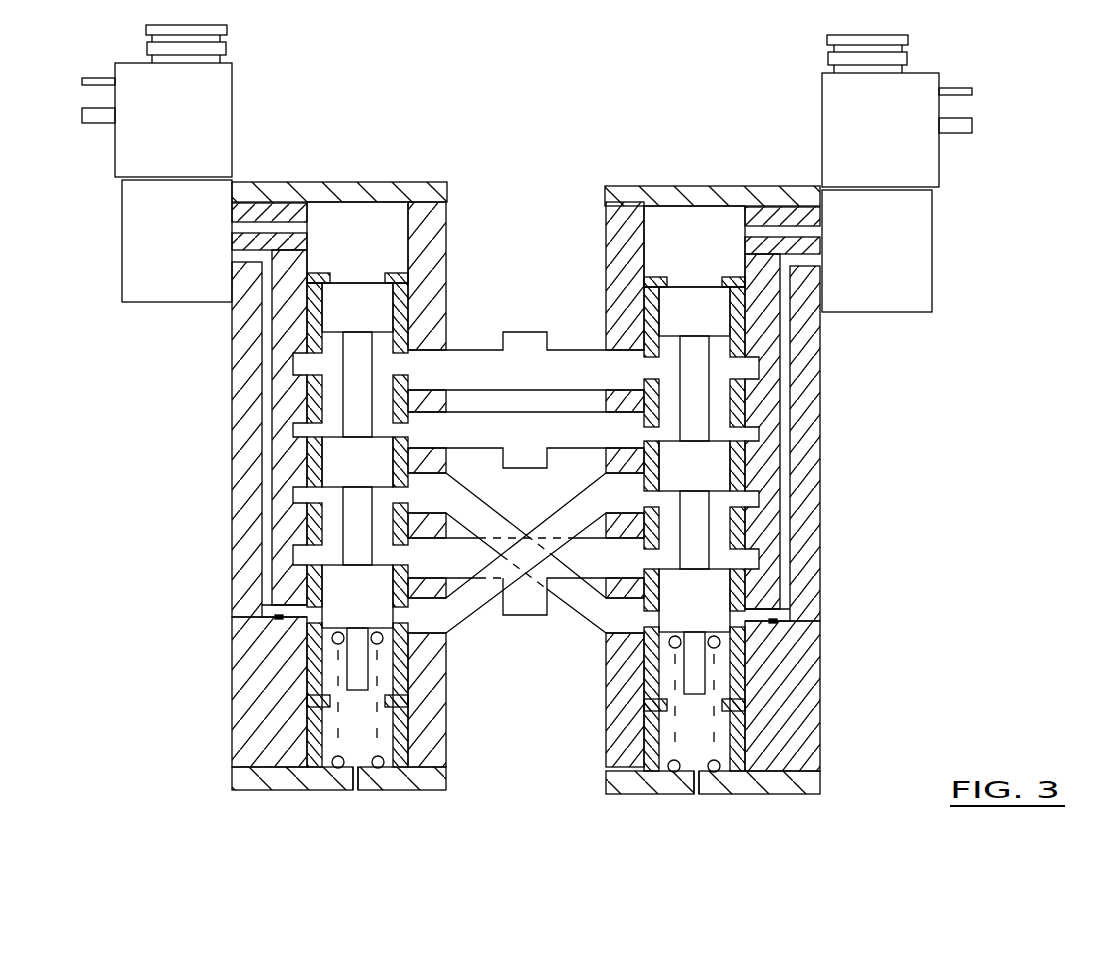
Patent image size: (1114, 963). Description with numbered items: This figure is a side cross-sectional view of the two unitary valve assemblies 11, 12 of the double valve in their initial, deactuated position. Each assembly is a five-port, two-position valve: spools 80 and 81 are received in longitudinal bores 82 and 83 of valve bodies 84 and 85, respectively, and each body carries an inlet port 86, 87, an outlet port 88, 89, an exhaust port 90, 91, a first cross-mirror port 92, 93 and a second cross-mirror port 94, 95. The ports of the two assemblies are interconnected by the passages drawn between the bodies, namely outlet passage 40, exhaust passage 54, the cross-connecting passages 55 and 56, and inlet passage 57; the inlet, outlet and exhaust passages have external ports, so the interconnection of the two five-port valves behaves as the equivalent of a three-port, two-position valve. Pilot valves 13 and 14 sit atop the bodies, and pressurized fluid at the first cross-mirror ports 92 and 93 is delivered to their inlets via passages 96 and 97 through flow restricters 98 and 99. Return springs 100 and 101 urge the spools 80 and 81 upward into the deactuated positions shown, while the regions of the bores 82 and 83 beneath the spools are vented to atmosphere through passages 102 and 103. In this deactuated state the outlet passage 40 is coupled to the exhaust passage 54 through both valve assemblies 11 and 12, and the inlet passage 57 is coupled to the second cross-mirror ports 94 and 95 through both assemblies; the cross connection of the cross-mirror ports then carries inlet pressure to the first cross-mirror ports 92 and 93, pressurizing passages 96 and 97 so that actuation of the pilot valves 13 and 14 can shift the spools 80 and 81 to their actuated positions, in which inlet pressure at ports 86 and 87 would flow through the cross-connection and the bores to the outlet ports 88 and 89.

The valve assembly 11 is at (372, 148).
The valve assembly 12 is at (722, 167).
The pilot valve 13 is at (233, 110).
The pilot valve 14 is at (822, 109).
The outlet passage 40 is at (533, 412).
The exhaust passage 54 is at (563, 350).
The passage 55 is at (475, 615).
The passage 56 is at (585, 620).
The inlet passage 57 is at (525, 615).
The spool 80 is at (358, 282).
The spool 81 is at (703, 278).
The longitudinal bore 82 is at (337, 220).
The longitudinal bore 83 is at (688, 230).
The valve body 84 is at (447, 215).
The valve body 85 is at (605, 225).
The inlet port 86 is at (440, 572).
The inlet port 87 is at (638, 572).
The outlet port 88 is at (440, 447).
The outlet port 89 is at (638, 447).
The exhaust port 90 is at (442, 381).
The exhaust port 91 is at (637, 381).
The first cross-mirror port 92 is at (440, 632).
The first cross-mirror port 93 is at (638, 632).
The second cross-mirror port 94 is at (442, 505).
The second cross-mirror port 95 is at (637, 505).
The passage 96 is at (250, 472).
The passage 97 is at (795, 480).
The flow restricter 98 is at (277, 627).
The flow restricter 99 is at (785, 647).
The return spring 100 is at (340, 722).
The return spring 101 is at (672, 723).
The passage 102 is at (357, 792).
The passage 103 is at (695, 797).